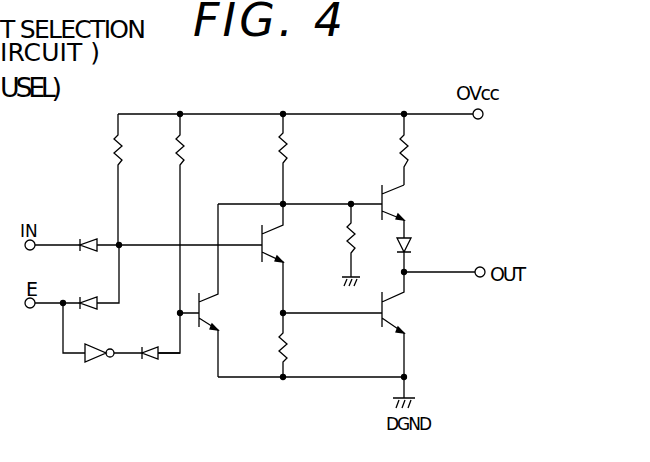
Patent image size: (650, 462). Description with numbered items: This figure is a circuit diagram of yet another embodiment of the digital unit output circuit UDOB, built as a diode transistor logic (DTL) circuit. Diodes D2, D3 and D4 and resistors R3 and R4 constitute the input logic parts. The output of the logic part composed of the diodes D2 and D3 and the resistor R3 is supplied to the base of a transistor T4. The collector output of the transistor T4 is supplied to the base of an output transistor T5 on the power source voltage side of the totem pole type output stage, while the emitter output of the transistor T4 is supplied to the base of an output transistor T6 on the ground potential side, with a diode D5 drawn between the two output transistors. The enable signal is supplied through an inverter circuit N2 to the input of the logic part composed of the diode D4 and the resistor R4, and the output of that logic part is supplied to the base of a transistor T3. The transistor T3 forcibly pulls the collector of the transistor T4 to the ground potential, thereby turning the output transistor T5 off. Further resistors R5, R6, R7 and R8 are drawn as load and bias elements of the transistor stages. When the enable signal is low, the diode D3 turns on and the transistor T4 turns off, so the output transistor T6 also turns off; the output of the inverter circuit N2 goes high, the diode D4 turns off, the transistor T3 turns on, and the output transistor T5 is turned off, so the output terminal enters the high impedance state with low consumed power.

The digital unit output circuit UDOB is at (272, 100).
The resistor R3 is at (104, 179).
The resistor R4 is at (186, 233).
The resistor R5 is at (299, 159).
The resistor R6 is at (420, 149).
The resistor R7 is at (358, 256).
The resistor R8 is at (300, 345).
The diode D2 is at (91, 234).
The diode D3 is at (91, 292).
The diode D4 is at (155, 344).
The diode D5 is at (420, 246).
The inverter circuit N2 is at (102, 332).
The transistor T3 is at (213, 290).
The transistor T4 is at (288, 258).
The output transistor T5 is at (407, 202).
The output transistor T6 is at (357, 324).